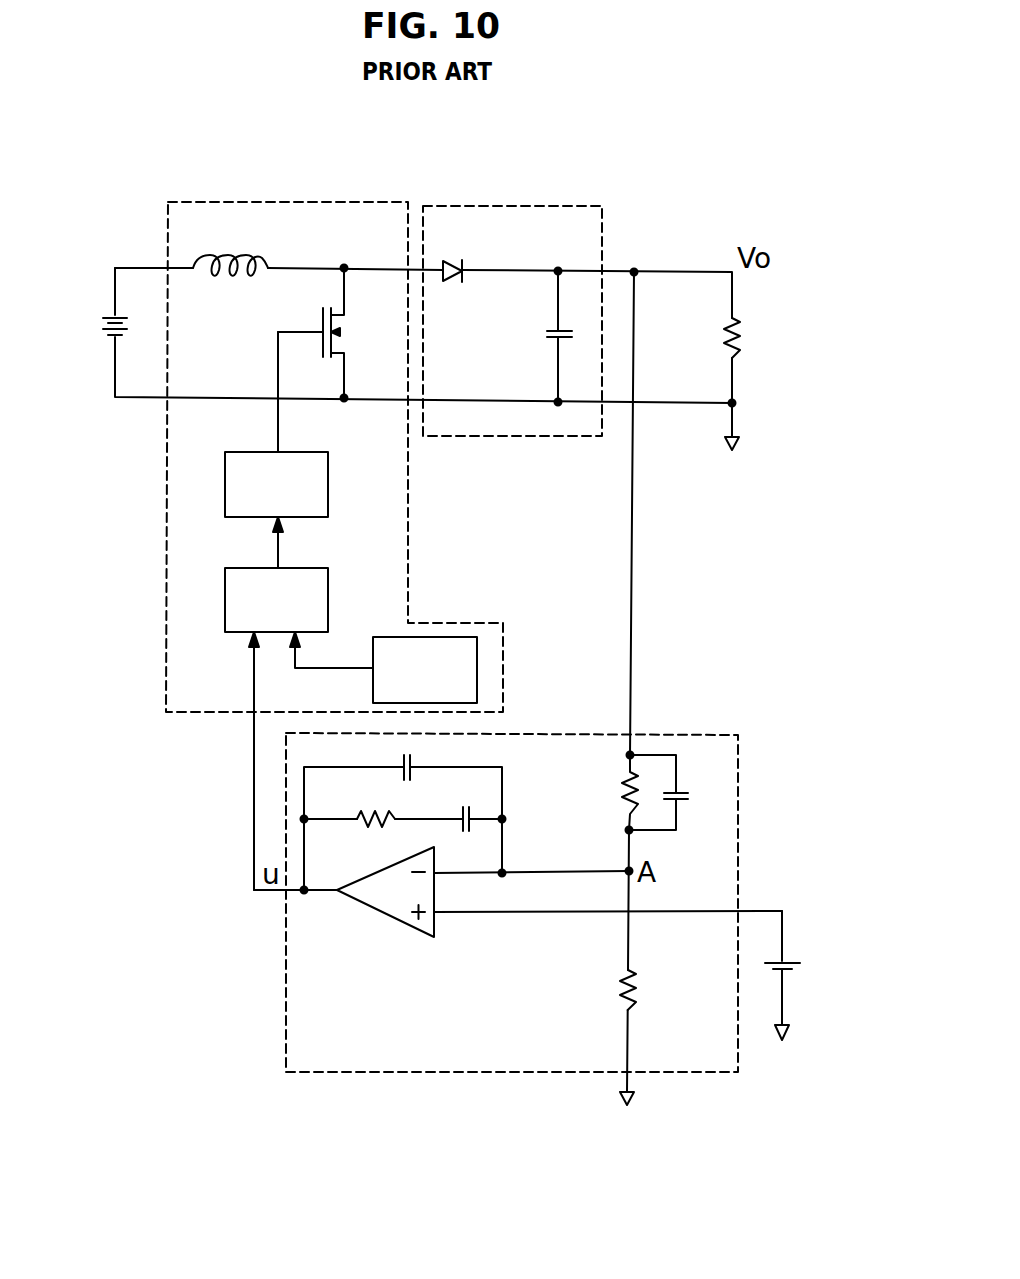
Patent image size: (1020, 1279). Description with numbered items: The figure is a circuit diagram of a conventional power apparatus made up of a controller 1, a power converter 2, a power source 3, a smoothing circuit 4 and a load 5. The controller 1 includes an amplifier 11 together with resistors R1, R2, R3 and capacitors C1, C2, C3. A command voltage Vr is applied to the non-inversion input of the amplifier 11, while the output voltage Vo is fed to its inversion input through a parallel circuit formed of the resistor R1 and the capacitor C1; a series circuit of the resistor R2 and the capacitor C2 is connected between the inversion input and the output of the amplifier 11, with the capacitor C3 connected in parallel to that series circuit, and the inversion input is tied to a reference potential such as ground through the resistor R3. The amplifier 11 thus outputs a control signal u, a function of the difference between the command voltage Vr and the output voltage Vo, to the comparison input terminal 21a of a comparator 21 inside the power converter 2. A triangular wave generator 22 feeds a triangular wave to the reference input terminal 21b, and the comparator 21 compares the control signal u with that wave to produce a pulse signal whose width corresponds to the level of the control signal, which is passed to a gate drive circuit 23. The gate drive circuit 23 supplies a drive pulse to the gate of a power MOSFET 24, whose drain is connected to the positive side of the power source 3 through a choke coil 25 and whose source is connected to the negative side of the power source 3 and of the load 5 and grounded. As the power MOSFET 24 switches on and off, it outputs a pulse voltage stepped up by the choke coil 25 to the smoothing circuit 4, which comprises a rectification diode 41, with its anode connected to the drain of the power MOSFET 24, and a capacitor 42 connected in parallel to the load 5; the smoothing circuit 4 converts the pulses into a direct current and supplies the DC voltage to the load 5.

The controller 1 is at (672, 735).
The power converter 2 is at (286, 202).
The power source 3 is at (104, 325).
The smoothing circuit 4 is at (566, 206).
The load 5 is at (742, 345).
The amplifier 11 is at (385, 900).
The comparator 21 is at (261, 619).
The comparison input terminal 21a is at (250, 637).
The reference input terminal 21b is at (296, 642).
The triangular wave generator 22 is at (410, 687).
The gate drive circuit 23 is at (261, 503).
The power MOSFET 24 is at (350, 328).
The choke coil 25 is at (258, 240).
The rectification diode 41 is at (469, 247).
The capacitor 42 is at (545, 334).
The resistor R1 is at (607, 793).
The resistor R2 is at (372, 828).
The resistor R3 is at (636, 1003).
The capacitor C1 is at (681, 792).
The capacitor C2 is at (456, 834).
The capacitor C3 is at (411, 783).
The command voltage Vr is at (798, 975).